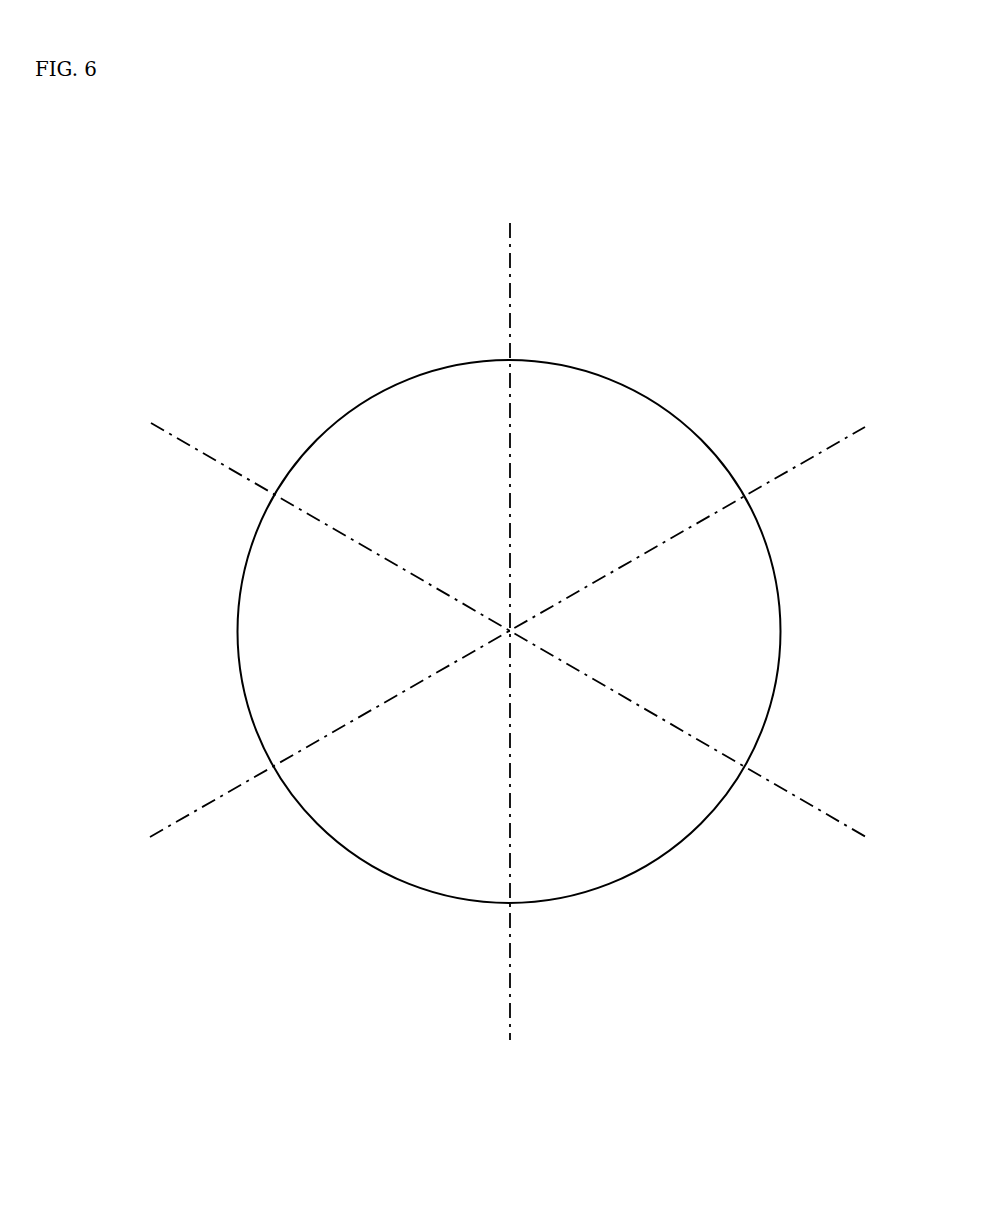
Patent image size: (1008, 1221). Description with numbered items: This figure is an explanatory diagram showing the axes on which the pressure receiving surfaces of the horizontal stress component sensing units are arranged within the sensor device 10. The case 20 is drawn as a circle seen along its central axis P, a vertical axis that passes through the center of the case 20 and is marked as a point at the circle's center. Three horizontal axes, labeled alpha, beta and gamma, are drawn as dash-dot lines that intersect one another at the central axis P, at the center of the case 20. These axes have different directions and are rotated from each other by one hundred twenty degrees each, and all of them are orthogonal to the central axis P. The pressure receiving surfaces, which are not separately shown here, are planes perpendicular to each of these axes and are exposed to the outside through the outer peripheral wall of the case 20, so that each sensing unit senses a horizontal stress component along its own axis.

The optical element / lens arrangement 10 is at (504, 577).
The case 20 is at (378, 394).
The central axis P is at (526, 605).